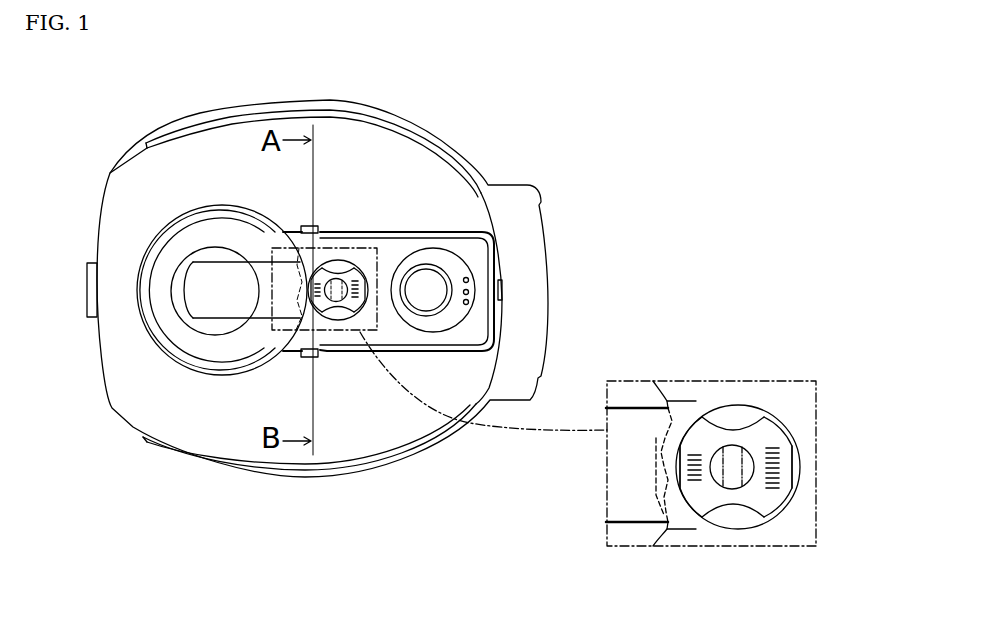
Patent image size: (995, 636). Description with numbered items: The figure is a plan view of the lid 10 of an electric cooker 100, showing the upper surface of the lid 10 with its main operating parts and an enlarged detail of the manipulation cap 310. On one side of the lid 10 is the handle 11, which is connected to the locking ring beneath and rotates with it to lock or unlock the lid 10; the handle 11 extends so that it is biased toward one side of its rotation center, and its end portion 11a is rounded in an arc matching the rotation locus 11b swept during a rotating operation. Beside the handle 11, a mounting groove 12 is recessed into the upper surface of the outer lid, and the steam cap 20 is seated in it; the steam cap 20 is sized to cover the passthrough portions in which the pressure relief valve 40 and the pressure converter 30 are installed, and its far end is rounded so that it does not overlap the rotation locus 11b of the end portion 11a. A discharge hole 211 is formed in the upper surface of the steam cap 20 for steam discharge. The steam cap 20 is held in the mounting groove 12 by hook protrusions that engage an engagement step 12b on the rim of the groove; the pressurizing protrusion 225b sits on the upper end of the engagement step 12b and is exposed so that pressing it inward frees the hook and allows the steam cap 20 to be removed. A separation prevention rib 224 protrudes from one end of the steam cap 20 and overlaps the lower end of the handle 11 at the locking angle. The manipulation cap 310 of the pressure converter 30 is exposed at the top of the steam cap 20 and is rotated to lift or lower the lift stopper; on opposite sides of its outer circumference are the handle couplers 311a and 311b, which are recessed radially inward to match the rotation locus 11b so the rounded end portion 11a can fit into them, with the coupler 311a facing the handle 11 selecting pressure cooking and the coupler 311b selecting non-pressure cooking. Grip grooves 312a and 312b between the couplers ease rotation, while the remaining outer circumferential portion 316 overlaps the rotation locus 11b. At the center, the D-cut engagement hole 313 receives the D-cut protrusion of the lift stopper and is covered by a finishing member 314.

The electric cooker 100 is at (113, 83).
The lid 10 is at (465, 129).
The handle 11 is at (197, 293).
The end portion 11a is at (291, 350).
The rotation locus 11b is at (286, 346).
The mounting groove 12 is at (380, 229).
The engagement step 12b is at (300, 229).
The steam cap 20 is at (499, 253).
The discharge hole 211 is at (469, 291).
The separation prevention rib 224 is at (666, 480).
The pressurizing protrusion 225b is at (338, 322).
The pressure converter 30 is at (354, 350).
The pressure relief valve 40 is at (438, 268).
The manipulation cap 310 is at (700, 436).
The handle coupler at one side 311a is at (679, 458).
The handle coupler at the other side 311b is at (793, 466).
The grip groove 312a is at (736, 428).
The grip groove 312b is at (740, 510).
The D-cut engagement hole 313 is at (752, 473).
The finishing member 314 is at (751, 460).
The outer circumferential portion 316 is at (684, 433).